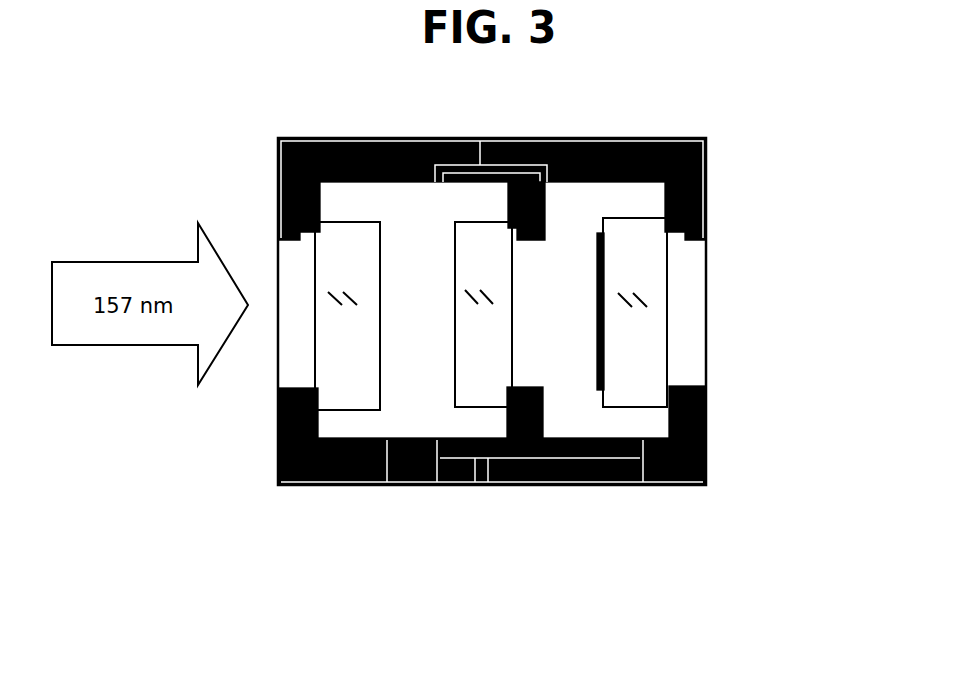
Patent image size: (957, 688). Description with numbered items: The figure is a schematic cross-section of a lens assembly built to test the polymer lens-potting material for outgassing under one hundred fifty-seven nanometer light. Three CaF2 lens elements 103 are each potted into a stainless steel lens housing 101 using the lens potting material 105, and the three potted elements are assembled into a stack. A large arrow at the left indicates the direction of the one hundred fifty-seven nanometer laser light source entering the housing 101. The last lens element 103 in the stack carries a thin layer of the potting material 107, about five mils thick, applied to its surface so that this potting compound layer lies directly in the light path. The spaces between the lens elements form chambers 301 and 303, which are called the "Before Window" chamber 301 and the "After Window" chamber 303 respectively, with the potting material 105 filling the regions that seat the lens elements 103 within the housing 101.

The stainless steel lens housing 101 is at (683, 153).
The CaF2 lens element 103 is at (372, 402).
The lens potting material 105 is at (280, 423).
The layer of potting material 107 is at (597, 235).
The Before Window chamber 301 is at (397, 207).
The After Window chamber 303 is at (608, 198).